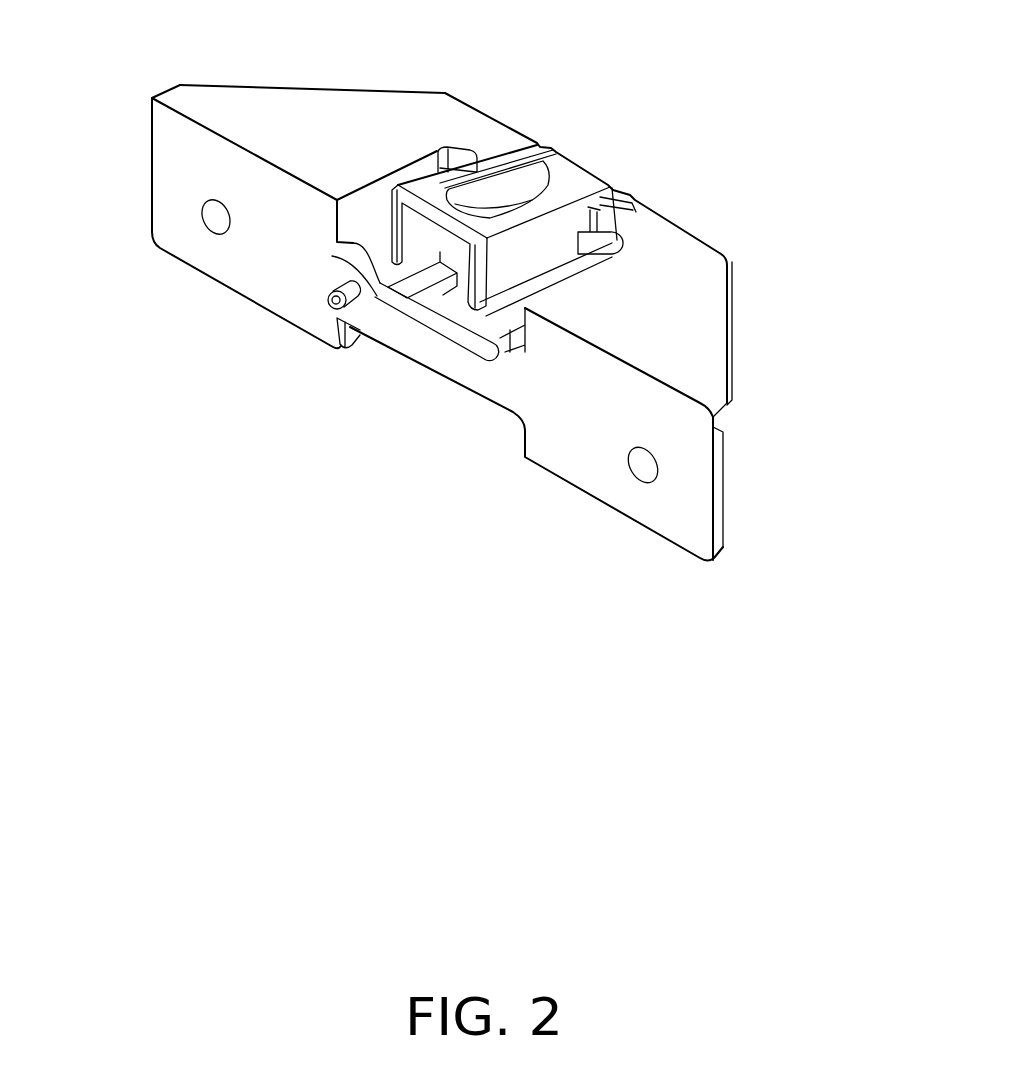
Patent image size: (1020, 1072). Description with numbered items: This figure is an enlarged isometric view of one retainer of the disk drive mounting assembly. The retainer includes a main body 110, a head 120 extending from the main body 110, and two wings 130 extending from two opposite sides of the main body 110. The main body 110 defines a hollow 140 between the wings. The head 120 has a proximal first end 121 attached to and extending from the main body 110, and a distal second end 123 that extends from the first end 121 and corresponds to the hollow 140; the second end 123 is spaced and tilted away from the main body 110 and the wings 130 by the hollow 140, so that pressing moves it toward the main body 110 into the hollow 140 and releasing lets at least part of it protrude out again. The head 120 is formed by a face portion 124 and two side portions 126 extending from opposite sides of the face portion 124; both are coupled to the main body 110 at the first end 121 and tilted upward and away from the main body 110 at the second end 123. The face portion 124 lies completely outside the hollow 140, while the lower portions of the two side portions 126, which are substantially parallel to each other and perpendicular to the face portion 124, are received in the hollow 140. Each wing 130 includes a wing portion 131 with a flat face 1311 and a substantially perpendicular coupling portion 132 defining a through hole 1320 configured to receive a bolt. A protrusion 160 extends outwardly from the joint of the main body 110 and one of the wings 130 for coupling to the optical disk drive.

The main body 110 is at (457, 370).
The head 120 is at (581, 175).
The first end 121 is at (523, 192).
The second end 123 is at (419, 222).
The face portion 124 is at (518, 267).
The side portions 126 is at (597, 222).
The wings 130 is at (473, 323).
The wing portion 131 is at (737, 390).
The flat face 1311 is at (700, 320).
The coupling portion 132 is at (656, 434).
The through hole 1320 is at (640, 470).
The hollow 140 is at (577, 272).
The protrusion 160 is at (332, 312).